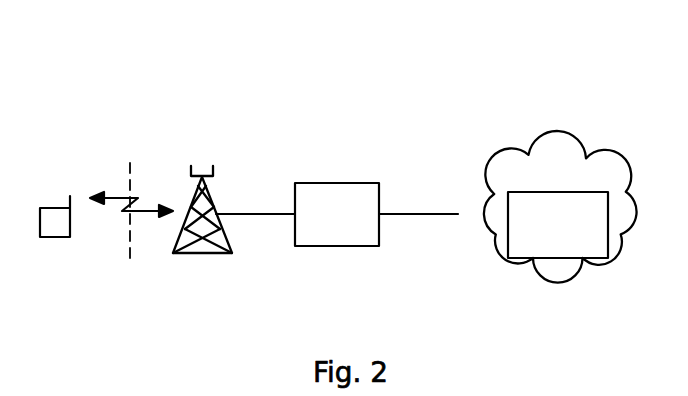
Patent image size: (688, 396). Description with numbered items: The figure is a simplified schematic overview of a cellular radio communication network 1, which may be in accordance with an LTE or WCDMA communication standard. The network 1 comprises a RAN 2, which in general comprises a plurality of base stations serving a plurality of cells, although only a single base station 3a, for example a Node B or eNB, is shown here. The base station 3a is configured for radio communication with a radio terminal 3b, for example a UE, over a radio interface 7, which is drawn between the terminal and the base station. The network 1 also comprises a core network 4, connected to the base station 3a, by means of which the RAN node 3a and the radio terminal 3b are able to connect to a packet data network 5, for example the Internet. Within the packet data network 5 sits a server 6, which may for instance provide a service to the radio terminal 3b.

The cellular radio communication network 1 is at (406, 117).
The RAN 2 is at (227, 157).
The base station 3a is at (207, 247).
The radio terminal 3b is at (53, 224).
The core network 4 is at (344, 211).
The packet data network 5 is at (534, 188).
The server 6 is at (564, 220).
The radio interface 7 is at (137, 157).